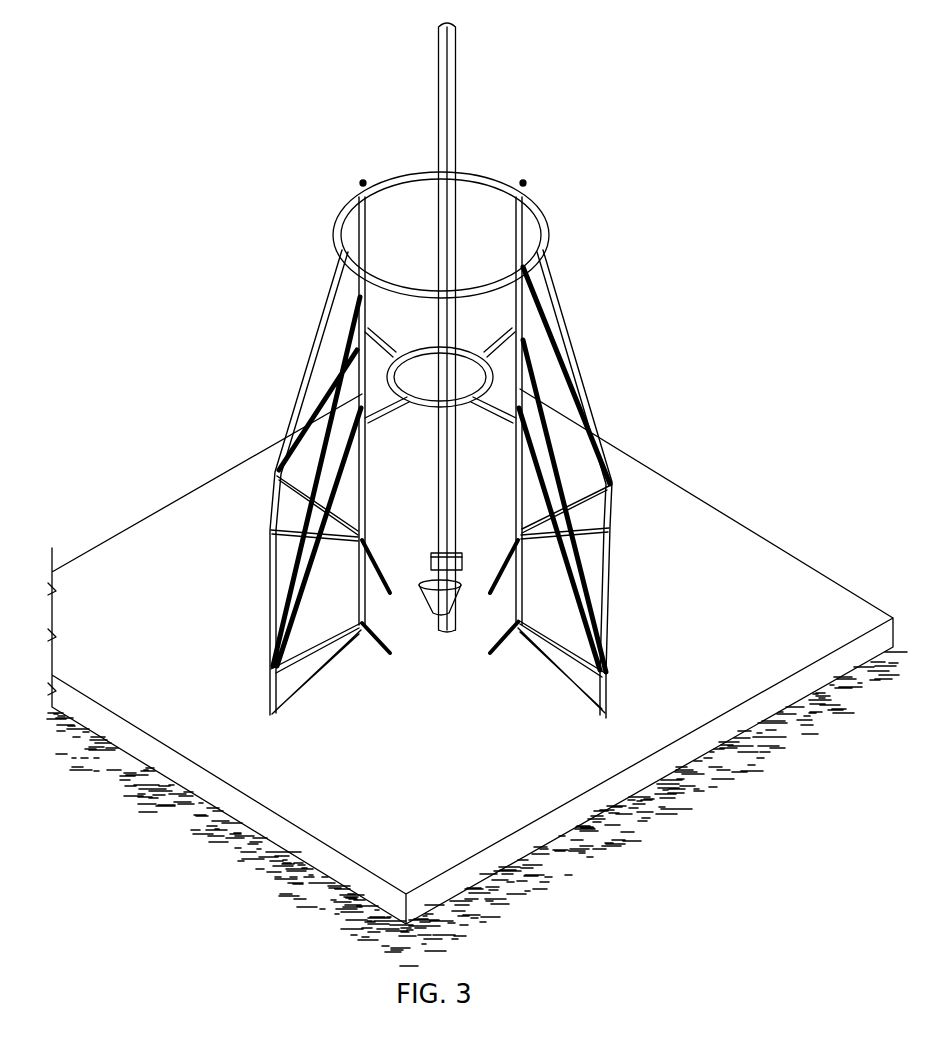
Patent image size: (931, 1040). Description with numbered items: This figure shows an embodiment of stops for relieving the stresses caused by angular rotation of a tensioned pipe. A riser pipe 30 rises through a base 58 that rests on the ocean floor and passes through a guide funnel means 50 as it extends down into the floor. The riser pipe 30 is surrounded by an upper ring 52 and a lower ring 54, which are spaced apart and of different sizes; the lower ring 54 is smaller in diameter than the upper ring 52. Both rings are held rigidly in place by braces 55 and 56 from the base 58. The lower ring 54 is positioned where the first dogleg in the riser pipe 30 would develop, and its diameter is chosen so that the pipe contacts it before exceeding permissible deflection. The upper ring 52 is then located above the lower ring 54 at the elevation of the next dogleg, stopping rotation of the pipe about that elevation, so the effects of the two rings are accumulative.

The riser pipe 30 is at (452, 68).
The guide funnel means 50 is at (443, 607).
The upper ring 52 is at (483, 172).
The lower ring 54 is at (460, 346).
The brace 55 is at (560, 290).
The brace 56 is at (502, 422).
The base 58 is at (682, 508).